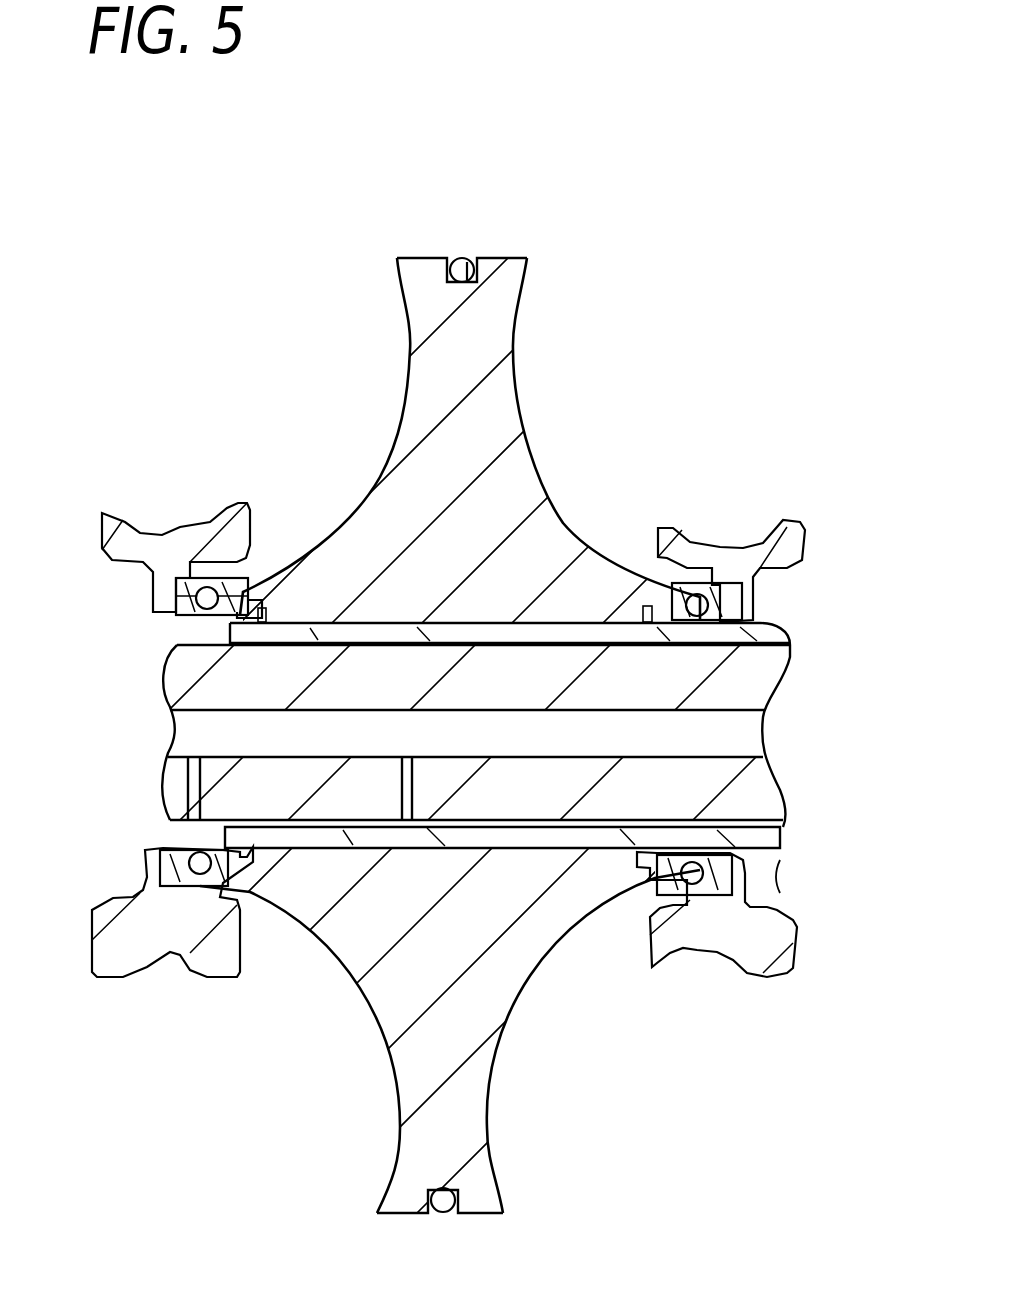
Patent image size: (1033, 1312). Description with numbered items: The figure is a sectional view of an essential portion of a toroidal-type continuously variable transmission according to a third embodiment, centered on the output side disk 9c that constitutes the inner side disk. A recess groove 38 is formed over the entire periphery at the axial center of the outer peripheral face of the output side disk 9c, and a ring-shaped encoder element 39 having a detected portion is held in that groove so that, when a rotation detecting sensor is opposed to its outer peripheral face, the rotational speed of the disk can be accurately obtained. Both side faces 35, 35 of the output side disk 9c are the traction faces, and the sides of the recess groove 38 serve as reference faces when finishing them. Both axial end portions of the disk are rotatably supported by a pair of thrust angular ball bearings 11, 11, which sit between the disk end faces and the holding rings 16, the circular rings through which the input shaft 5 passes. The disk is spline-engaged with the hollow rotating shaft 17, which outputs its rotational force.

The input shaft 5 is at (228, 677).
The output side disk 9c is at (497, 482).
The thrust angular ball bearing 11 is at (203, 870).
The holding ring 16 is at (170, 590).
The hollow rotating shaft 17 is at (753, 840).
The side face 35 is at (513, 393).
The recess groove 38 is at (467, 277).
The encoder element 39 is at (458, 258).